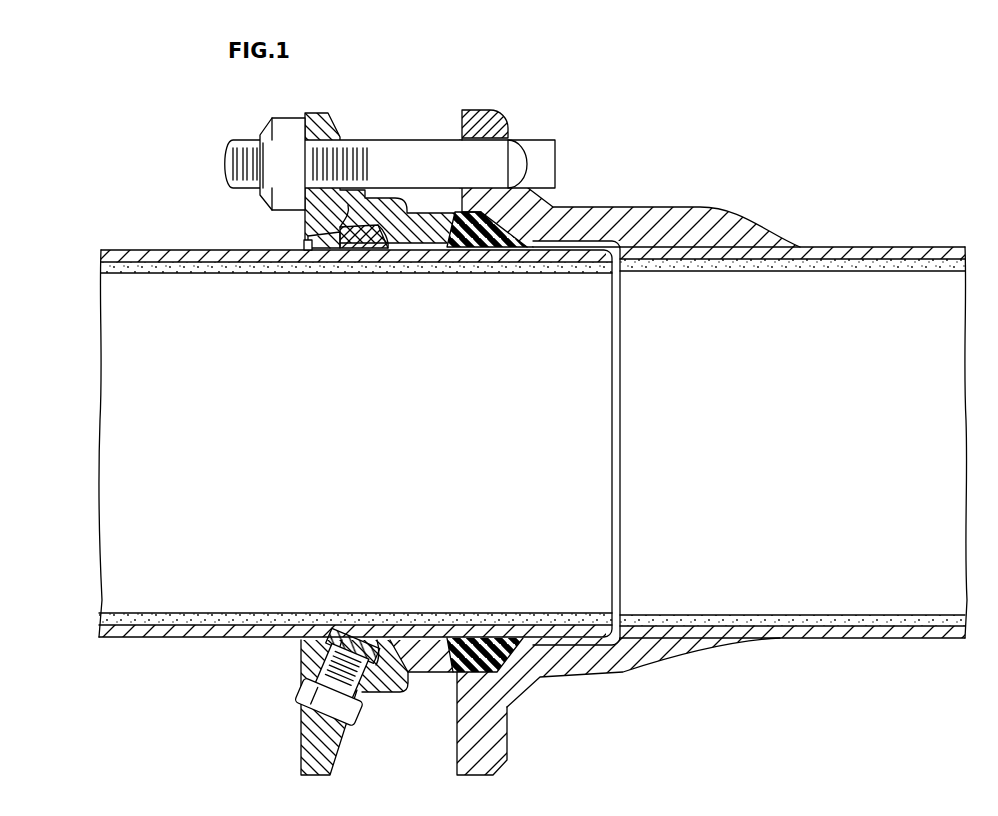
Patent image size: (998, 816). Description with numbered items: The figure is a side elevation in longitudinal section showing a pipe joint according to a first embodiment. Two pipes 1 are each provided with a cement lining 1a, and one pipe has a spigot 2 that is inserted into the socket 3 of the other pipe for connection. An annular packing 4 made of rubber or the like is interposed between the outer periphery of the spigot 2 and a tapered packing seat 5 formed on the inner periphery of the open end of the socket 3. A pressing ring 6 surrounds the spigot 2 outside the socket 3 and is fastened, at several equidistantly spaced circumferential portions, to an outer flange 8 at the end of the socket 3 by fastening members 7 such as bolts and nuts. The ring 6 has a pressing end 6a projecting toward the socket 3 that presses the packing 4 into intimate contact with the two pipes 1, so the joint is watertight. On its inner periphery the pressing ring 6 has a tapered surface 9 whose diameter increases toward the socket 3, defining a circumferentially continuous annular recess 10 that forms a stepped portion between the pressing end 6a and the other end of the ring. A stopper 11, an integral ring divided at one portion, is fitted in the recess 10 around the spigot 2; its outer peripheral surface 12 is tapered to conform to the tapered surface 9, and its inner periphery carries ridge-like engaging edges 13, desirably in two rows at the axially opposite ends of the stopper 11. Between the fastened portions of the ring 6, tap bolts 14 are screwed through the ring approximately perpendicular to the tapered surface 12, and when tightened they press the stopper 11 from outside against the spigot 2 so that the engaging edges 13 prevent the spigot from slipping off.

The pipe 1 is at (122, 249).
The cement lining 1a is at (160, 268).
The spigot 2 is at (435, 255).
The socket 3 is at (570, 217).
The annular packing 4 is at (500, 233).
The tapered packing seat 5 is at (510, 660).
The pressing ring 6 is at (397, 198).
The pressing end 6a is at (450, 210).
The fastening members 7 is at (420, 153).
The outer flange 8 is at (498, 125).
The tapered surface 9 is at (305, 241).
The annular recess 10 is at (323, 248).
The stopper 11 is at (360, 248).
The outer peripheral surface 12 is at (337, 215).
The engaging edges 13 is at (343, 252).
The tap bolts 14 is at (336, 707).